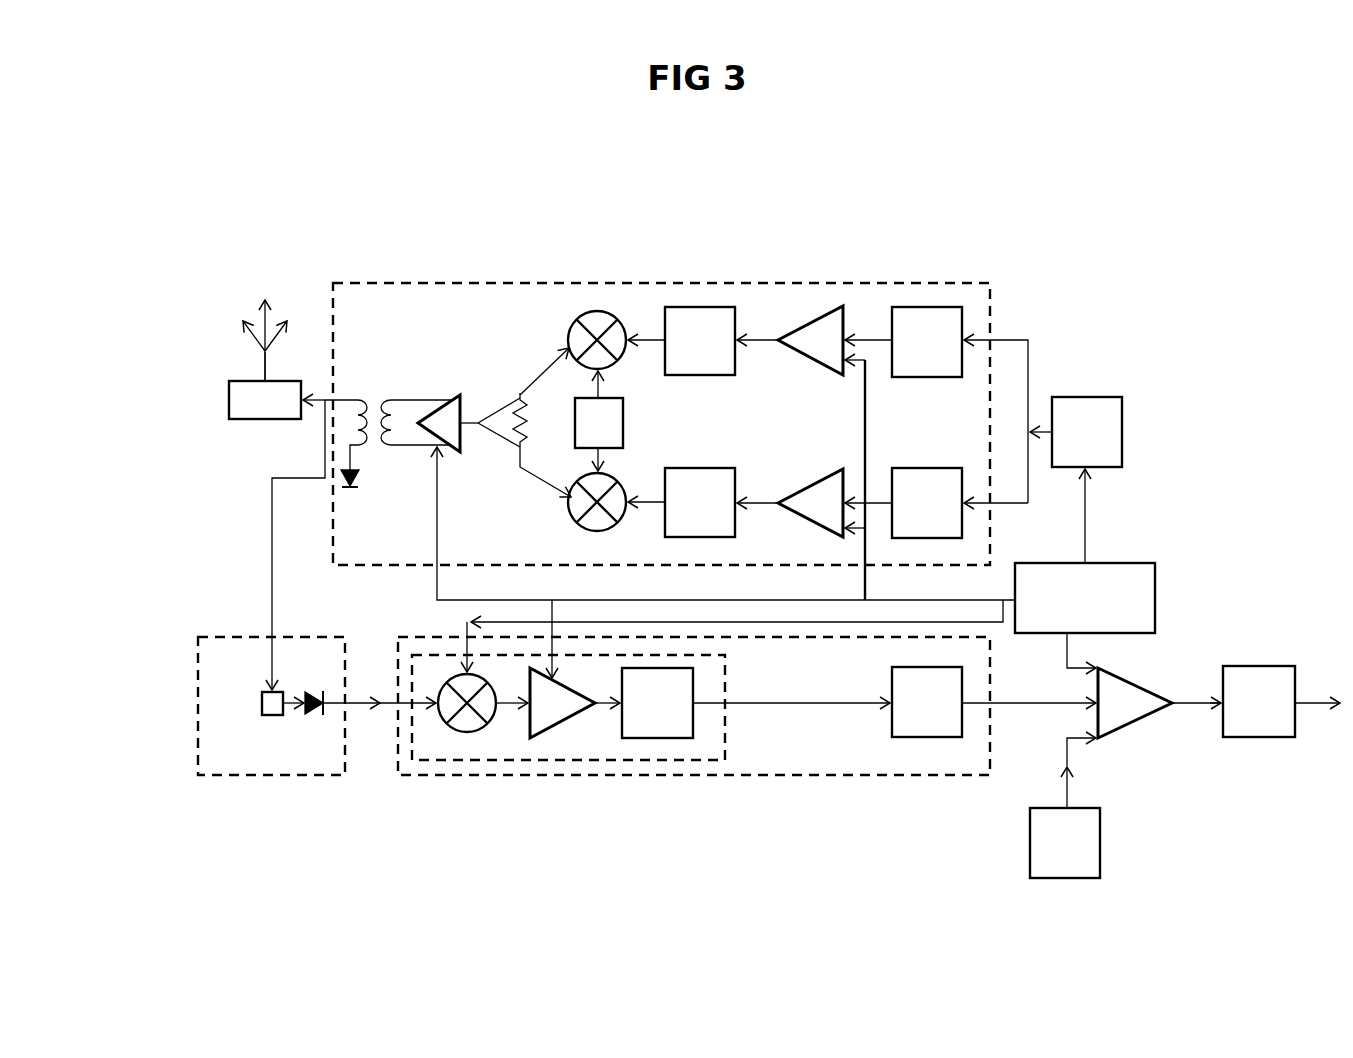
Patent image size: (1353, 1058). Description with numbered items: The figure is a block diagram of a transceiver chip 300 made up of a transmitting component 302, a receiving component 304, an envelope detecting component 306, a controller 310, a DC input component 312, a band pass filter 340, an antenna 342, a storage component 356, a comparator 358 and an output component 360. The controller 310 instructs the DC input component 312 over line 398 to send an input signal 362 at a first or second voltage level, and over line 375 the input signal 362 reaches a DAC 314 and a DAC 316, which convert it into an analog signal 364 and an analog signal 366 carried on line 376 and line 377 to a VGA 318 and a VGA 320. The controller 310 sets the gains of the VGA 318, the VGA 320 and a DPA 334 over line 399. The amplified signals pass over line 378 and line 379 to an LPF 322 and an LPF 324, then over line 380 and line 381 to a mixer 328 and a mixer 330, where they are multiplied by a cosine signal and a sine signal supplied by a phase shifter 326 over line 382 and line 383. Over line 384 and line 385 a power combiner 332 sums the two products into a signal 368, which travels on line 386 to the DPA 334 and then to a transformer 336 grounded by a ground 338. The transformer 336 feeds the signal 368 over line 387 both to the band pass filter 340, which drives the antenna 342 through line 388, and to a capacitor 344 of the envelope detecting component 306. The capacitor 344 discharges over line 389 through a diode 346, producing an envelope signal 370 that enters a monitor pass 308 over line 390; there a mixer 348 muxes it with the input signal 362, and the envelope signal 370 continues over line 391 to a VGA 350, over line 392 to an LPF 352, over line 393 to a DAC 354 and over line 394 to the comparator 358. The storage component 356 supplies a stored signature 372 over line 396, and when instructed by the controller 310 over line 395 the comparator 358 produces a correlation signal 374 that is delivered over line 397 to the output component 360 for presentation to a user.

The transceiver chip 300 is at (697, 195).
The transmitting component 302 is at (660, 281).
The receiving component 304 is at (790, 789).
The envelope detecting component 306 is at (298, 782).
The monitor pass 308 is at (563, 764).
The controller 310 is at (1085, 598).
The DC input component 312 is at (1087, 432).
The digital-to-analog converter 314 is at (927, 342).
The DAC 316 is at (927, 503).
The variable gain amplifier 318 is at (810, 340).
The VGA 320 is at (810, 503).
The low pass filter 322 is at (700, 341).
The LPF 324 is at (700, 502).
The phase shifter 326 is at (627, 425).
The mixer 328 is at (571, 321).
The mixer 330 is at (573, 524).
The power combiner 332 is at (506, 449).
The differential power amplifier 334 is at (446, 384).
The transformer 336 is at (381, 396).
The ground 338 is at (353, 483).
The band pass filter 340 is at (227, 405).
The antenna 342 is at (240, 302).
The capacitor 344 is at (258, 700).
The diode 346 is at (310, 721).
The mixer 348 is at (447, 682).
The VGA 350 is at (562, 703).
The LPF 352 is at (657, 703).
The DAC 354 is at (927, 702).
The storage component 356 is at (1065, 843).
The comparator 358 is at (1135, 703).
The output component 360 is at (1281, 701).
The input signal 362 is at (1041, 441).
The analog signal 364 is at (880, 347).
The analog signal 366 is at (880, 499).
The signal 368 is at (481, 421).
The envelope signal 370 is at (385, 708).
The signature 372 is at (1072, 766).
The correlation signal 374 is at (1185, 708).
The line 375 is at (1030, 369).
The line 376 is at (864, 365).
The line 377 is at (862, 498).
The line 378 is at (762, 339).
The line 379 is at (762, 502).
The line 380 is at (645, 338).
The line 381 is at (645, 505).
The line 382 is at (602, 384).
The line 383 is at (602, 459).
The line 384 is at (551, 366).
The line 385 is at (546, 482).
The line 386 is at (472, 418).
The line 387 is at (270, 600).
The line 388 is at (263, 364).
The line 389 is at (293, 700).
The line 390 is at (395, 699).
The line 391 is at (510, 710).
The line 392 is at (612, 700).
The line 393 is at (770, 700).
The line 394 is at (1004, 702).
The line 395 is at (1070, 655).
The line 396 is at (1061, 746).
The line 397 is at (1213, 709).
The line 398 is at (1088, 510).
The line 399 is at (900, 600).